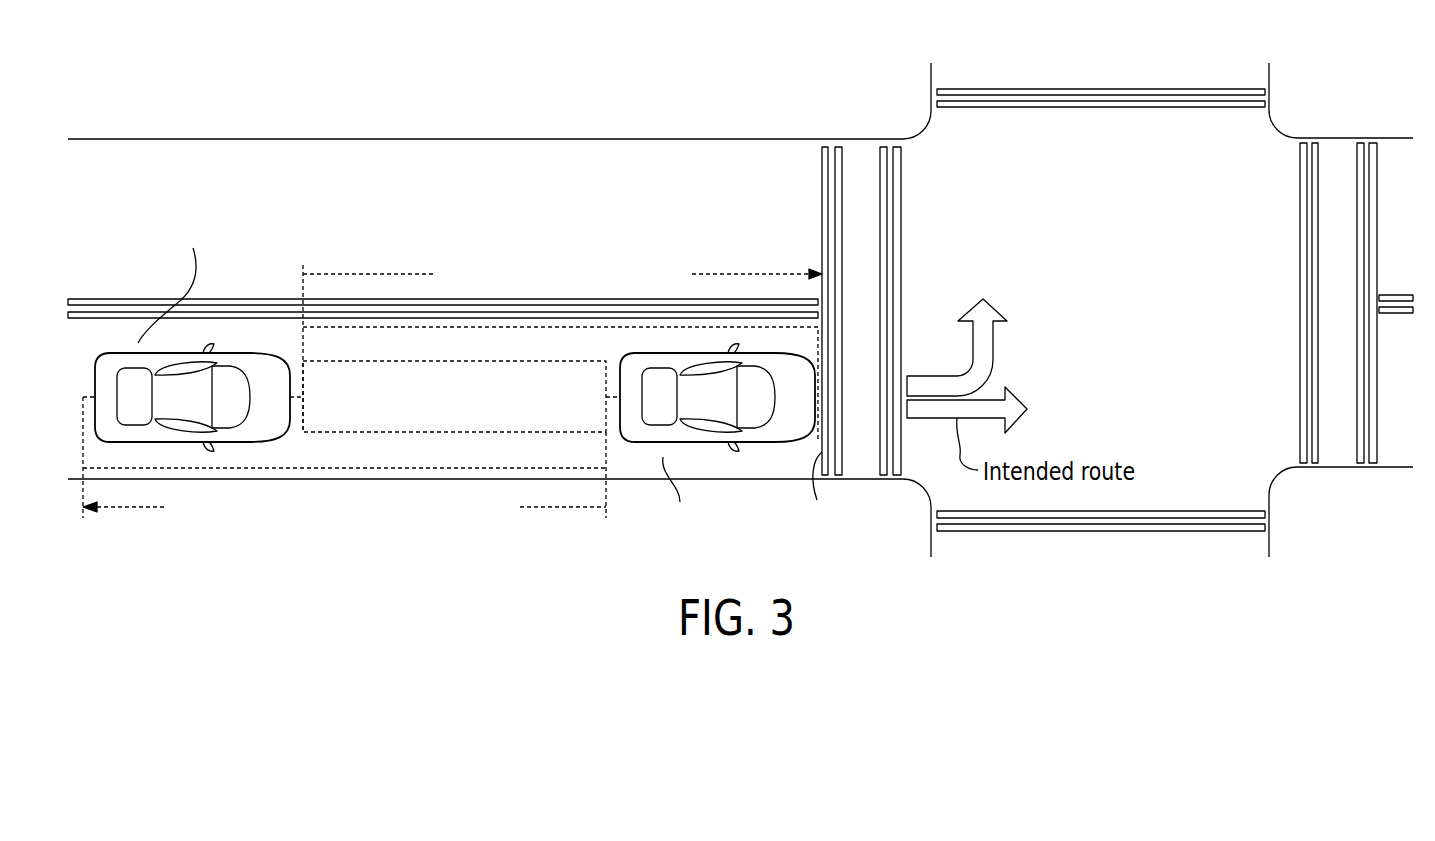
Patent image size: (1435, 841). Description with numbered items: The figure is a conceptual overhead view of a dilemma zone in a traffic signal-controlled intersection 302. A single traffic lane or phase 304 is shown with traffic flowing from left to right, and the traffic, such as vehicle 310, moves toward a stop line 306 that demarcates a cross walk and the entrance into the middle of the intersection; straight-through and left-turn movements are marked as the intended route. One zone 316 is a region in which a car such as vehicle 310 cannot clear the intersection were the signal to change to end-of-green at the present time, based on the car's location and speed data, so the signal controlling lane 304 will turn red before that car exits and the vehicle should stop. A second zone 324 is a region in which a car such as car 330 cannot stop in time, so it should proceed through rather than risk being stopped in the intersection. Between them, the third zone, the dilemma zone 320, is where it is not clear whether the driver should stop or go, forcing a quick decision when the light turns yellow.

The traffic signal-controlled intersection 302 is at (650, 80).
The traffic lane or phase 304 is at (195, 317).
The stop line 306 is at (822, 165).
The vehicle 310 is at (264, 355).
The zone 316 is at (553, 470).
The dilemma zone 320 is at (453, 361).
The second zone 324 is at (705, 327).
The car 330 is at (787, 358).